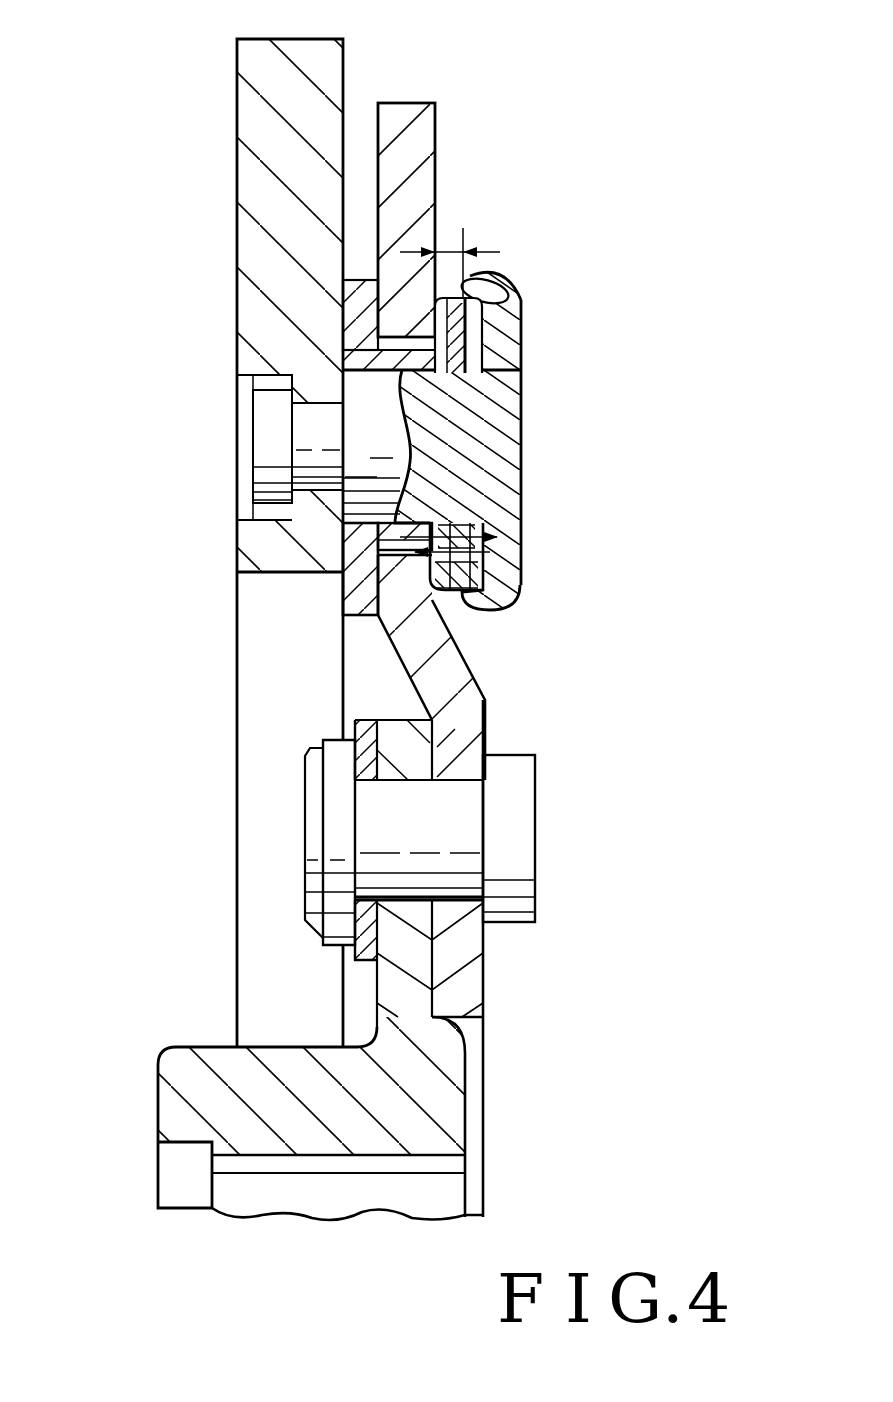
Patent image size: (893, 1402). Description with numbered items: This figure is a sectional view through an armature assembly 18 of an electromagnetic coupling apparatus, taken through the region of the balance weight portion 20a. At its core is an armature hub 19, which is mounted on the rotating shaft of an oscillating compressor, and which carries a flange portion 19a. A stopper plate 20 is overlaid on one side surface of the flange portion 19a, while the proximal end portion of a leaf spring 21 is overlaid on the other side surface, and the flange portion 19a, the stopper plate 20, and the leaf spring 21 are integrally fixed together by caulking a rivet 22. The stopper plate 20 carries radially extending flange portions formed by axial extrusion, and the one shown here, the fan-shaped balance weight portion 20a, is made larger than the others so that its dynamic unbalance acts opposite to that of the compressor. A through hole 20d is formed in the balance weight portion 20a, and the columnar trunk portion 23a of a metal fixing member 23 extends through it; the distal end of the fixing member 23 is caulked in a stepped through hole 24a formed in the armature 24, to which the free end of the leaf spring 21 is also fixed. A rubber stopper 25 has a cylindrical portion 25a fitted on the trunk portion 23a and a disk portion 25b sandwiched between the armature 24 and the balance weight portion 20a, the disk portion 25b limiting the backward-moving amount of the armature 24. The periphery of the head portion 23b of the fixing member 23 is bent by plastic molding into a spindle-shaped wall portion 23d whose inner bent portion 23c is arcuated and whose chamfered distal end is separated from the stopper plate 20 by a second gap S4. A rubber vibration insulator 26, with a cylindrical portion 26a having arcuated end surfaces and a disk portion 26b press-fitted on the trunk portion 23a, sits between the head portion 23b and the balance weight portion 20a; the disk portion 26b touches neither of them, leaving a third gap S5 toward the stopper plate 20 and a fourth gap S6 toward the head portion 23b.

The armature assembly 18 is at (565, 173).
The armature hub 19 is at (190, 1082).
The flange portion 19a is at (415, 958).
The stopper plate 20 is at (478, 715).
The balance weight portion 20a is at (402, 112).
The through hole 20d is at (398, 356).
The leaf spring 21 is at (345, 722).
The rivet 22 is at (525, 822).
The fixing member 23 is at (258, 441).
The trunk portion 23a is at (488, 452).
The head portion 23b is at (497, 395).
The bent portion 23c is at (490, 305).
The wall portion 23d is at (500, 285).
The armature 24 is at (258, 61).
The stepped through hole 24a is at (257, 519).
The rubber stopper 25 is at (343, 296).
The cylindrical portion 25a is at (420, 557).
The disk portion 25b is at (343, 603).
The rubber vibration insulator 26 is at (470, 360).
The cylindrical portion 26a is at (445, 591).
The disk portion 26b is at (500, 588).
The second gap S4 is at (453, 247).
The third gap S5 is at (499, 540).
The fourth gap S6 is at (497, 526).